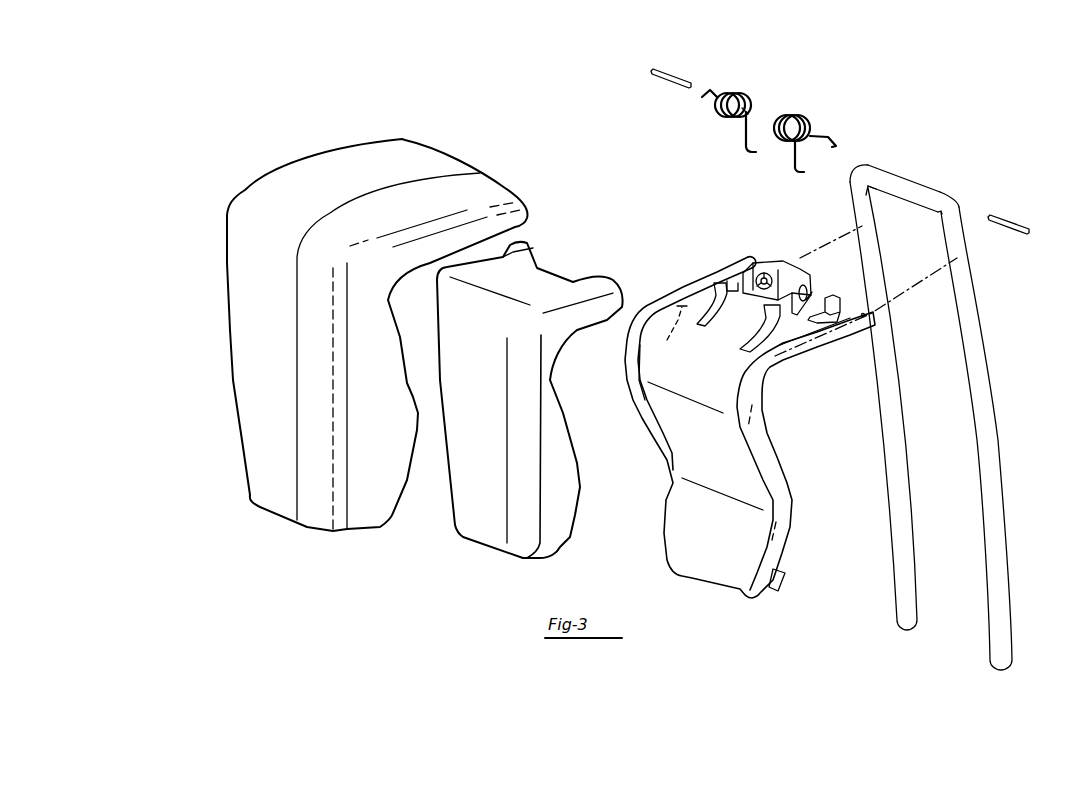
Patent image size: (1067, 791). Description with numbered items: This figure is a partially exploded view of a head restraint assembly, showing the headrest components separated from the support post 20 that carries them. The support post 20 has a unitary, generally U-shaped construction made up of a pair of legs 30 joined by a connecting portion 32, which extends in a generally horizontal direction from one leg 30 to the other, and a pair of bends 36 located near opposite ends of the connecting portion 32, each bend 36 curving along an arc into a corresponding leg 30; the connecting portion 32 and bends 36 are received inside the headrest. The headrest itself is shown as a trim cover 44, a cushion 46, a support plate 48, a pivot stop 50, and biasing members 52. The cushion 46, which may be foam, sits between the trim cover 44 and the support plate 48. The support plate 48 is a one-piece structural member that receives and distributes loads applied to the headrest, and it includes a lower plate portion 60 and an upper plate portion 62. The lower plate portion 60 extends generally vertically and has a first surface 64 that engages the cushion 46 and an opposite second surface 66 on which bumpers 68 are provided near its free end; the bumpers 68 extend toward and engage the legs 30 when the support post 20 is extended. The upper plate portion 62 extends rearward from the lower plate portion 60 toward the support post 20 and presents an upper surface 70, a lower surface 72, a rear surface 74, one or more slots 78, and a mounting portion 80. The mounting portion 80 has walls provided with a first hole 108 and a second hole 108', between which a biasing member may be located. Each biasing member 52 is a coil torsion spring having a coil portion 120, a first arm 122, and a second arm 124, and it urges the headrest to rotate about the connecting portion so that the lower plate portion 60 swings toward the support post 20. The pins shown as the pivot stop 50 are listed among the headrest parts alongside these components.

The support post 20 is at (989, 362).
The legs 30 is at (985, 491).
The connecting portion 32 is at (898, 186).
The bends 36 is at (848, 168).
The trim cover 44 is at (250, 367).
The cushion 46 is at (493, 535).
The support plate 48 is at (710, 562).
The pivot stop 50 is at (690, 88).
The biasing member 52 is at (746, 112).
The lower plate portion 60 is at (777, 495).
The upper plate portion 62 is at (805, 358).
The first surface 64 is at (672, 440).
The second surface 66 is at (759, 455).
The bumpers 68 is at (783, 576).
The upper surface 70 is at (682, 306).
The lower surface 72 is at (670, 333).
The rear surface 74 is at (843, 257).
The slots 78 is at (733, 282).
The mounting portion 80 is at (773, 262).
The first hole 108 is at (822, 275).
The second hole 108' is at (738, 317).
The coil portion 120 is at (740, 90).
The first arm 122 is at (710, 90).
The second arm 124 is at (750, 135).